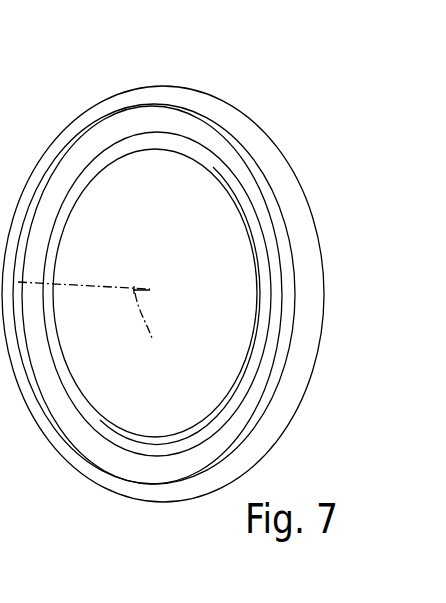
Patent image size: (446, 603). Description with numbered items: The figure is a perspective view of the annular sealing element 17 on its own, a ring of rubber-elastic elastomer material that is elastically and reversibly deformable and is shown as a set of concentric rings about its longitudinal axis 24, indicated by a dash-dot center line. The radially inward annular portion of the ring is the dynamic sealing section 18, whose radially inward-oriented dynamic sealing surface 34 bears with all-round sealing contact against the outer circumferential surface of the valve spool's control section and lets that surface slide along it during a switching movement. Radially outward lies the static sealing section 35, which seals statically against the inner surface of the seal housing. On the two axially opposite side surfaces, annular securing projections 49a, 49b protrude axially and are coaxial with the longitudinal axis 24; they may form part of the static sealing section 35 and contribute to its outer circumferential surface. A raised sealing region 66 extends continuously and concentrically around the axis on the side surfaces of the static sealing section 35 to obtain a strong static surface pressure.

The annular sealing element 17 is at (174, 258).
The dynamic sealing section 18 is at (210, 165).
The longitudinal axis 24 is at (91, 325).
The dynamic sealing surface 34 is at (58, 268).
The static sealing section 35 is at (236, 114).
The securing projection 49a is at (158, 95).
The securing projection 49b is at (297, 173).
The raised sealing region 66 is at (98, 100).